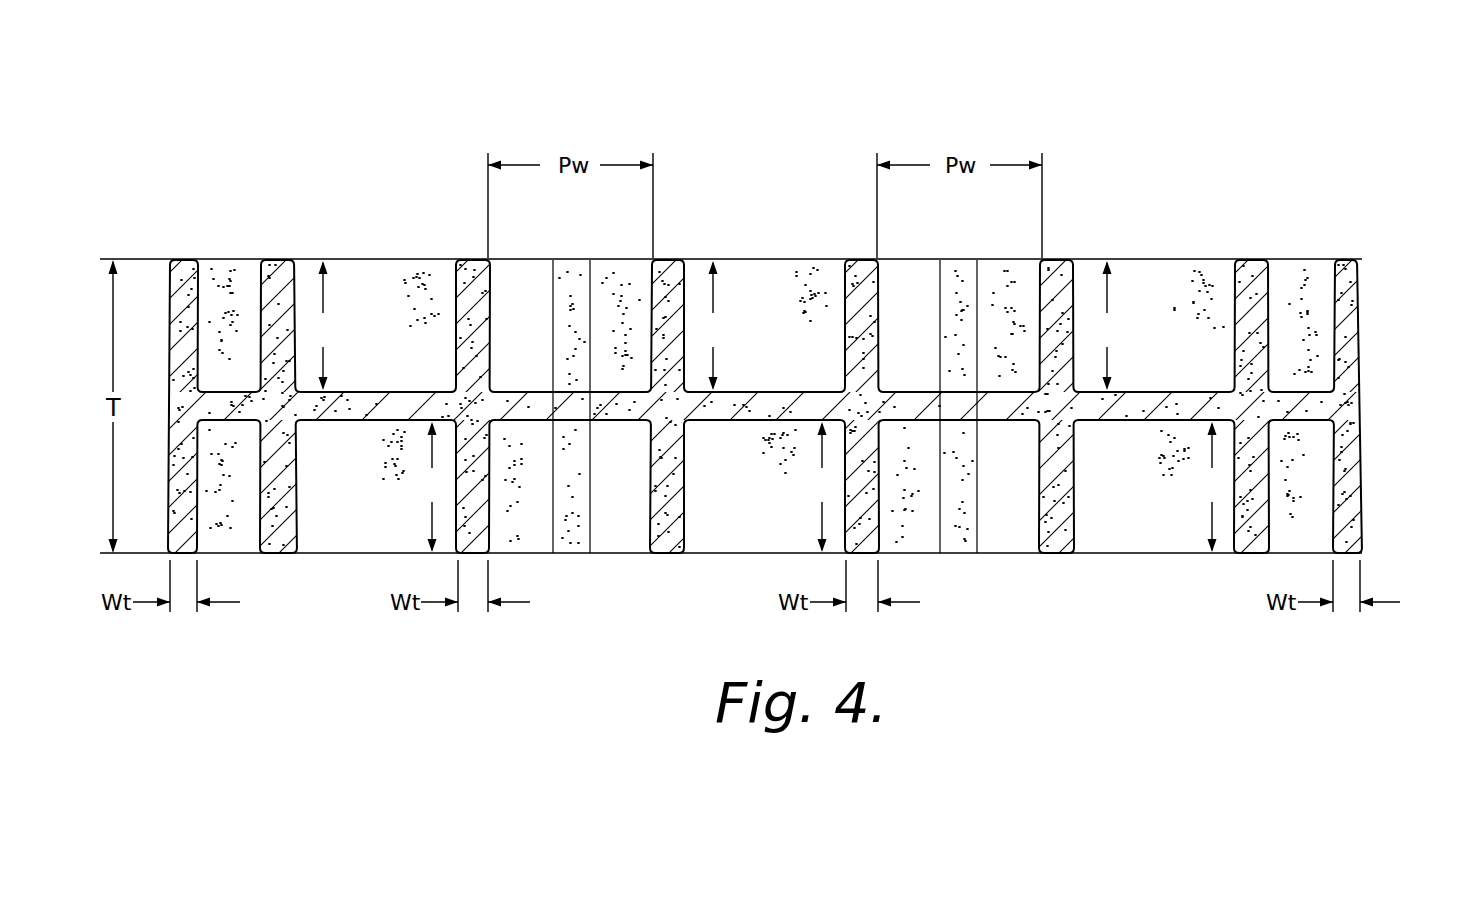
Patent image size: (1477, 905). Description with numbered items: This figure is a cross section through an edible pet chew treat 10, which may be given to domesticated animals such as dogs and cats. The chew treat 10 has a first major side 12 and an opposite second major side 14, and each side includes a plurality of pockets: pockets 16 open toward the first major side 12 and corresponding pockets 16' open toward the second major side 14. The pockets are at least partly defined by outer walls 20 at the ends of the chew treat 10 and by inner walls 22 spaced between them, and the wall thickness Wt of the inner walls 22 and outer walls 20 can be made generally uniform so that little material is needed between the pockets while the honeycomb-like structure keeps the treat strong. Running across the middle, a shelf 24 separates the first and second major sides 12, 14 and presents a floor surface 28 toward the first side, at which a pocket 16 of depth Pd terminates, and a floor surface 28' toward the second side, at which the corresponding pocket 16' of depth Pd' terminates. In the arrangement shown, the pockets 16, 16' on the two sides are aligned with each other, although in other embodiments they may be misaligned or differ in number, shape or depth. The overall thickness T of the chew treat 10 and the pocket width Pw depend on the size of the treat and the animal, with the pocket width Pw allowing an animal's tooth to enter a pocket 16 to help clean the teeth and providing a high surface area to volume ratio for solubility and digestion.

The chew treat 10 is at (872, 96).
The first major side 12 is at (1362, 148).
The second major side 14 is at (1193, 612).
The pocket 16 is at (762, 402).
The pocket 16' is at (799, 487).
The outer wall 20 is at (185, 292).
The inner wall 22 is at (276, 282).
The shelf 24 is at (1305, 405).
The floor surface 28 is at (812, 296).
The floor surface 28' is at (714, 486).